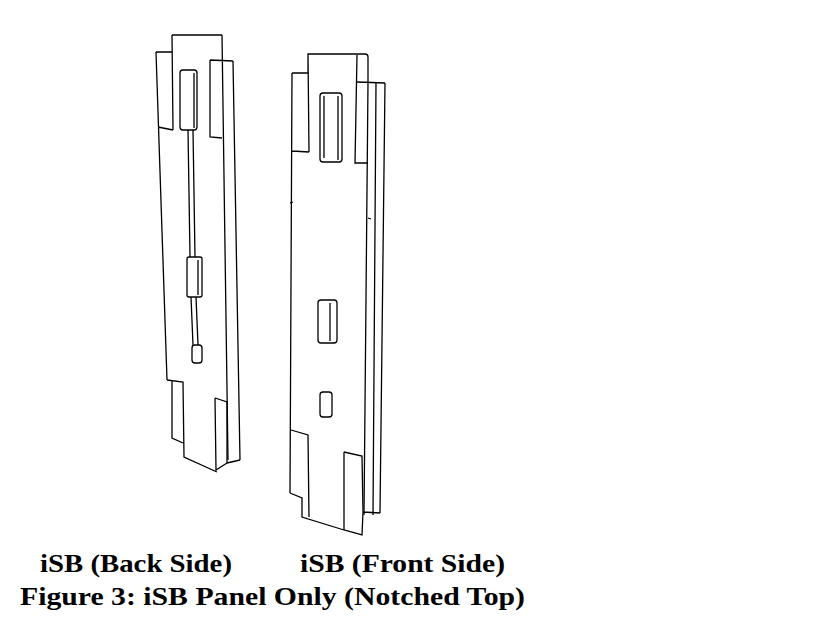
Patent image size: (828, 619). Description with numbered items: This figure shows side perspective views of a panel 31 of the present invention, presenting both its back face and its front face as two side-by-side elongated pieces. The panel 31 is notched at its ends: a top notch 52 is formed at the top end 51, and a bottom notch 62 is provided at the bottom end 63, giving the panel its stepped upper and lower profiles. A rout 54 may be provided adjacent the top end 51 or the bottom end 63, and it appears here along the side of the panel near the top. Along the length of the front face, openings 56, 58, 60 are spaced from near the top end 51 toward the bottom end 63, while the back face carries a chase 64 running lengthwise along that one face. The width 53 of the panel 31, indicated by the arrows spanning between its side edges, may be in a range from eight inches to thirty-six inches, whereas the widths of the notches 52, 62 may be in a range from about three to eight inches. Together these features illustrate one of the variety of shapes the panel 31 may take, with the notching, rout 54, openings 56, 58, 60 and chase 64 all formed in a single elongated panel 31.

The panel 31 is at (165, 352).
The top end 51 is at (367, 40).
The top notch 52 is at (369, 68).
The width 53 is at (293, 202).
The rout 54 is at (365, 112).
The opening 56 is at (343, 130).
The opening 58 is at (339, 326).
The opening 60 is at (336, 405).
The bottom notch 62 is at (363, 518).
The bottom end 63 is at (146, 468).
The chase 64 is at (186, 198).